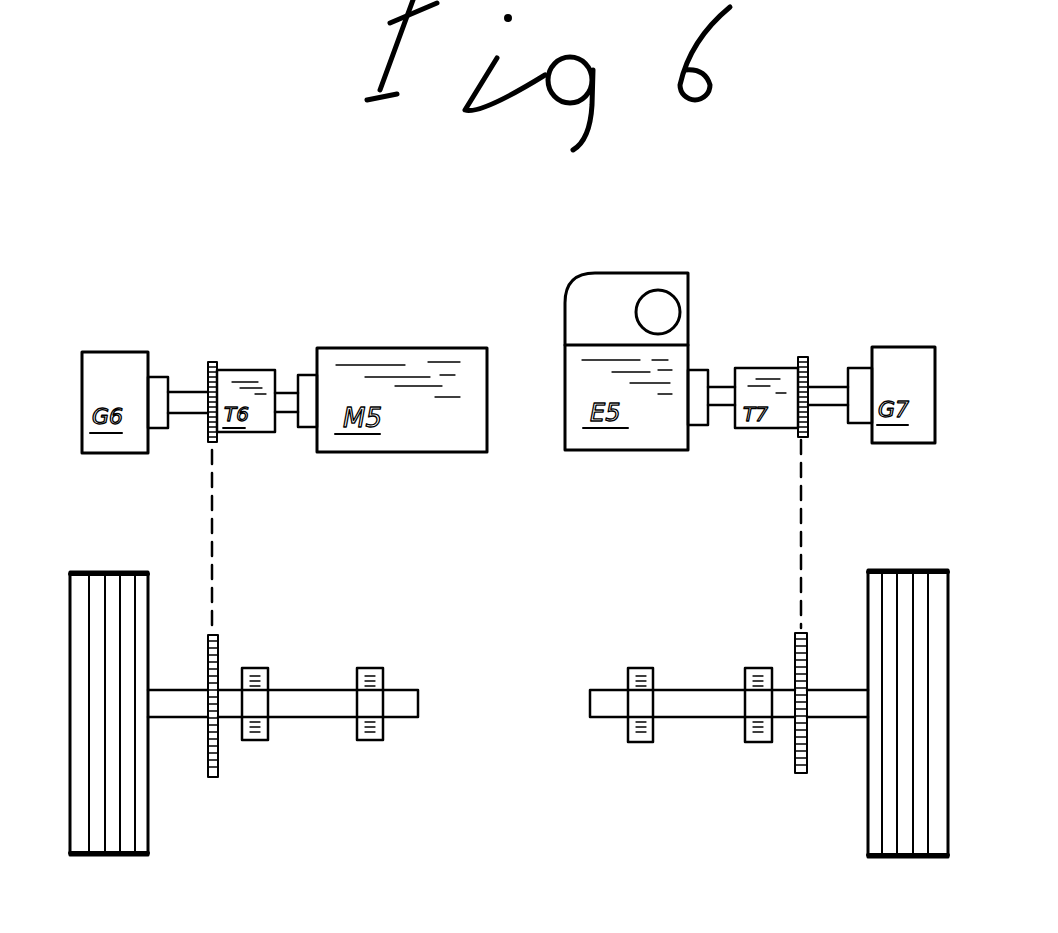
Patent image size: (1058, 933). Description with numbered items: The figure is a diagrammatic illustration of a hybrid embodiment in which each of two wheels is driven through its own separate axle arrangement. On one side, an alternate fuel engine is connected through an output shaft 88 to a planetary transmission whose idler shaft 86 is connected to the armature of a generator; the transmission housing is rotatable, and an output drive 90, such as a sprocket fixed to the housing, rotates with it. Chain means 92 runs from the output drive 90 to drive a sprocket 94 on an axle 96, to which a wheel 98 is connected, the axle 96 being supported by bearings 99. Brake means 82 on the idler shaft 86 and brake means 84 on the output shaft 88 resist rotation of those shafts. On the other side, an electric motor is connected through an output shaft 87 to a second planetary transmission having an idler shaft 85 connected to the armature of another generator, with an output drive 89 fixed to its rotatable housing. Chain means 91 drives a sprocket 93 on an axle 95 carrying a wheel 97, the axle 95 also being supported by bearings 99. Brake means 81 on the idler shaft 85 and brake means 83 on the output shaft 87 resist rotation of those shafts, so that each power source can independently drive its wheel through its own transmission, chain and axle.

The brake means 81 is at (155, 388).
The brake means 82 is at (857, 378).
The brake means 83 is at (305, 383).
The brake means 84 is at (698, 385).
The idler shaft 85 is at (183, 403).
The idler shaft 86 is at (830, 392).
The output shaft 87 is at (287, 405).
The output shaft 88 is at (722, 402).
The output drive 89 is at (208, 422).
The output drive 90 is at (808, 420).
The chain means 91 is at (218, 541).
The chain means 92 is at (797, 525).
The sprocket 93 is at (220, 645).
The sprocket 94 is at (797, 645).
The axle 95 is at (295, 700).
The axle 96 is at (700, 695).
The wheel 97 is at (110, 572).
The wheel 98 is at (895, 570).
The bearings 99 is at (372, 750).